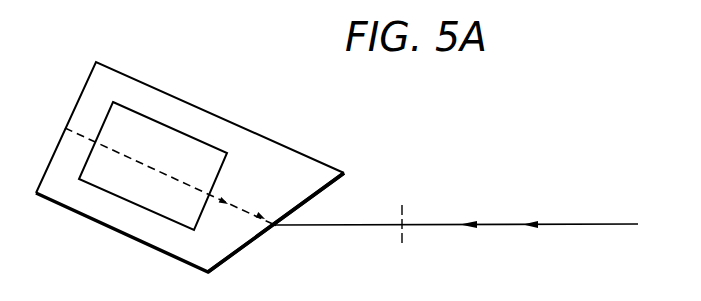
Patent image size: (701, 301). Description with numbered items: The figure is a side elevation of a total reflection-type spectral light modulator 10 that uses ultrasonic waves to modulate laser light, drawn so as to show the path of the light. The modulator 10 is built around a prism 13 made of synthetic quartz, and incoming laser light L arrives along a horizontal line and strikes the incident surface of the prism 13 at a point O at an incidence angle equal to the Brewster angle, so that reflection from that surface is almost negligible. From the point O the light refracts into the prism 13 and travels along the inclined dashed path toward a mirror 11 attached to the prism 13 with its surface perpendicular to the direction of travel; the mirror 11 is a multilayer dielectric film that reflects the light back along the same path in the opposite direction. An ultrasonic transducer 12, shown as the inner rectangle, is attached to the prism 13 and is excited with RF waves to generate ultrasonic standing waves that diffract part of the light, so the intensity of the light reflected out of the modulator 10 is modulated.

The light modulator 10 is at (219, 86).
The mirror 11 is at (84, 82).
The ultrasonic transducer 12 is at (145, 135).
The prism 13 is at (270, 160).
The light L is at (456, 218).
The point on the incident surface O is at (274, 229).